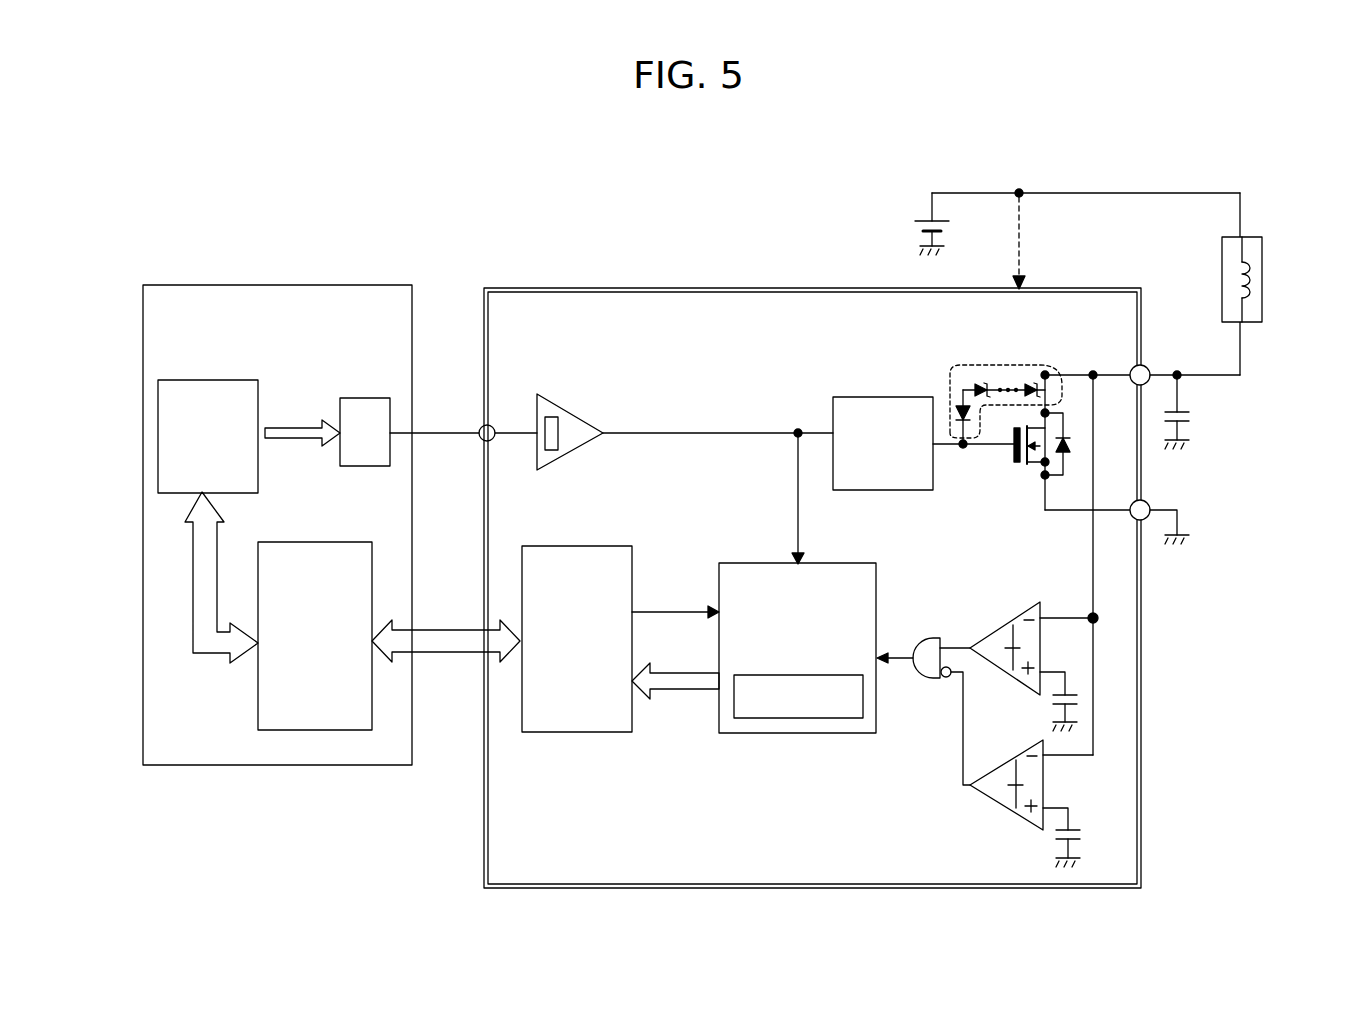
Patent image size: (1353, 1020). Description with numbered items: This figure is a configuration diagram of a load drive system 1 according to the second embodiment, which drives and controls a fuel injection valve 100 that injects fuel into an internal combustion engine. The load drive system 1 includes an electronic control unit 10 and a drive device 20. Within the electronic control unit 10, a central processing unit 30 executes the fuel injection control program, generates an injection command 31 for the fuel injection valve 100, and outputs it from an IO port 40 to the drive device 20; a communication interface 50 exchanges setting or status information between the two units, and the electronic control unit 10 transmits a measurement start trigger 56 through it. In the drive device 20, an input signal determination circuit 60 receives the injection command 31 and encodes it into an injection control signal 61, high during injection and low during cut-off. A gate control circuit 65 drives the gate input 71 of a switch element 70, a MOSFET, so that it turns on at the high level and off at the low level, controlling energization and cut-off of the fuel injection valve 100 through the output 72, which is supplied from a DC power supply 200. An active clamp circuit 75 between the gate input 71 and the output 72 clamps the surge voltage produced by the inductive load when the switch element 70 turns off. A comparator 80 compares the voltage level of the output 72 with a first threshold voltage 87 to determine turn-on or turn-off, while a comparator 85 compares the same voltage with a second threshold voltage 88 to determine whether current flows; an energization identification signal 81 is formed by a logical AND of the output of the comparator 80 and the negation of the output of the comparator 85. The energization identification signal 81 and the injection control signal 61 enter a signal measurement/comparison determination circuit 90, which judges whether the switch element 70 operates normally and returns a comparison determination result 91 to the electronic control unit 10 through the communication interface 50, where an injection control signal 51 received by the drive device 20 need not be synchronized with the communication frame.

The load drive system 1 is at (418, 236).
The electronic control unit 10 is at (285, 284).
The drive device 20 is at (800, 289).
The central processing unit 30 is at (210, 380).
The injection command 31 is at (296, 426).
The IO port 40 is at (365, 398).
The communication interface 50 is at (372, 542).
The injection control signal 51 is at (425, 628).
The measurement start trigger 56 is at (683, 612).
The input signal determination circuit 60 is at (570, 407).
The injection control signal 61 is at (757, 433).
The gate control circuit 65 is at (868, 397).
The switch element 70 is at (1033, 478).
The gate input 71 is at (1010, 450).
The output 72 is at (1160, 375).
The active clamp circuit 75 is at (955, 373).
The comparator 80 is at (1021, 608).
The energization identification signal 81 is at (906, 656).
The comparator 85 is at (1018, 752).
The first threshold voltage 87 is at (1076, 692).
The second threshold voltage 88 is at (1079, 828).
The signal measurement/comparison determination circuit 90 is at (775, 563).
The comparison determination result 91 is at (695, 697).
The fuel injection valve 100 is at (1222, 266).
The DC power supply 200 is at (925, 221).